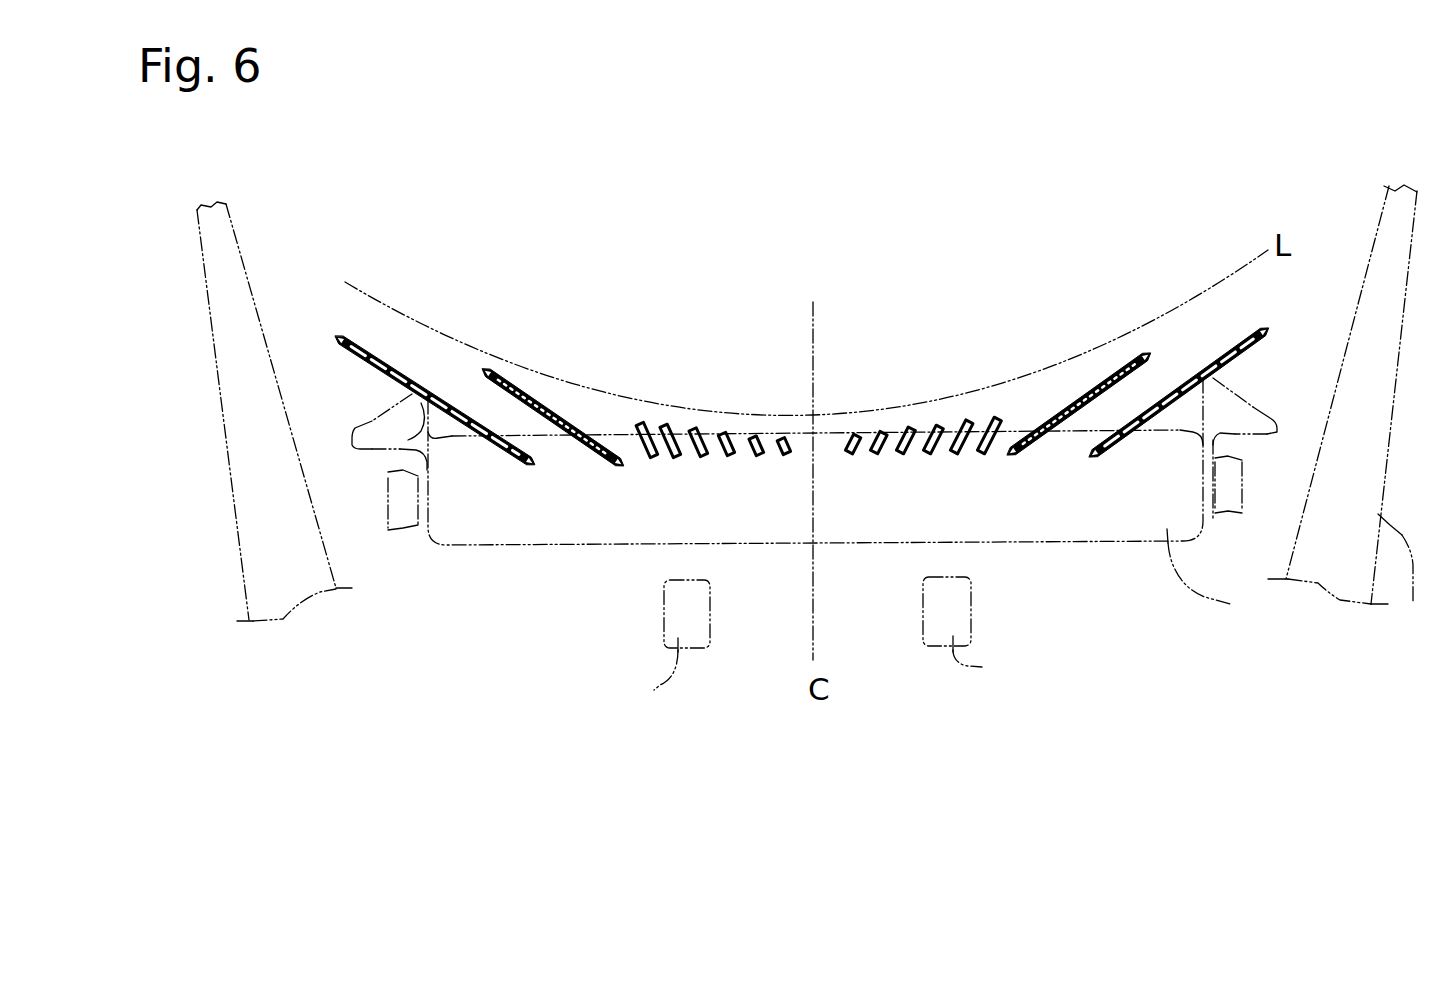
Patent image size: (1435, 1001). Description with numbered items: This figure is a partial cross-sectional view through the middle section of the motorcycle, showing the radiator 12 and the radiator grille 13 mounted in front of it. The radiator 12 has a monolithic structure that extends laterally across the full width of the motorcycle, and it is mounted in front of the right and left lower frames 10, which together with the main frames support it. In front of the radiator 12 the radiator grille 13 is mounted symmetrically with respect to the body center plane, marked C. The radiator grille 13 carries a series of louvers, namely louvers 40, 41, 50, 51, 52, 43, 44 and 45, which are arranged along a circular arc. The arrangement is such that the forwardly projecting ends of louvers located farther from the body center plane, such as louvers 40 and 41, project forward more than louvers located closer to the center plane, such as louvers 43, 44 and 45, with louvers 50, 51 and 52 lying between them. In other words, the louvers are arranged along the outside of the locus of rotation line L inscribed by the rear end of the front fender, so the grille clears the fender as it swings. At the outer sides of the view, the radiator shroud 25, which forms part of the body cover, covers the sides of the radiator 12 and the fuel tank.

The lower frame 10 is at (818, 648).
The radiator 12 is at (814, 502).
The radiator grille 13 is at (1083, 369).
The radiator shroud 25 is at (1351, 411).
The louver 40 is at (1227, 349).
The louver 41 is at (1117, 368).
The louver 43 is at (895, 453).
The louver 44 is at (877, 453).
The louver 45 is at (848, 453).
The louver 50 is at (992, 417).
The louver 51 is at (957, 420).
The louver 52 is at (930, 427).